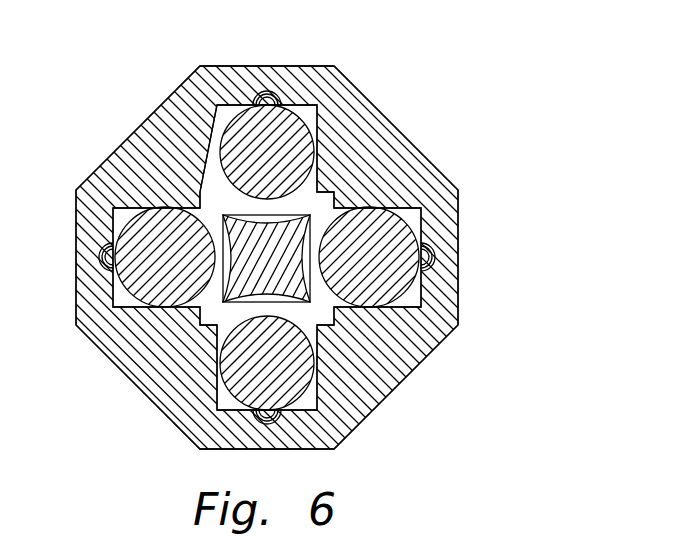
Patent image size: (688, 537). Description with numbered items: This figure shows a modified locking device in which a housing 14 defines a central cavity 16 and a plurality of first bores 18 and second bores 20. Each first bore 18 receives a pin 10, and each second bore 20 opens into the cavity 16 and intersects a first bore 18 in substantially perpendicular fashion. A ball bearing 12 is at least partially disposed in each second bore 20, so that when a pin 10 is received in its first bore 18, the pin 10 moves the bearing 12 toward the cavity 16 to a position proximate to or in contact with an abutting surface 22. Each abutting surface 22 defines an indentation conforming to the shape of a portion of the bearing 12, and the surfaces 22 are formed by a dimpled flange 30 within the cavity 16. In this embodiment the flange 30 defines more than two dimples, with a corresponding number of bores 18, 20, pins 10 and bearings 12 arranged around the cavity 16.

The pin 10 is at (267, 72).
The ball bearing 12 is at (382, 230).
The housing 14 is at (108, 344).
The cavity 16 is at (305, 225).
The first bore 18 is at (258, 98).
The second bore 20 is at (305, 90).
The abutting surface 22 is at (313, 205).
The dimpled flange 30 is at (303, 290).